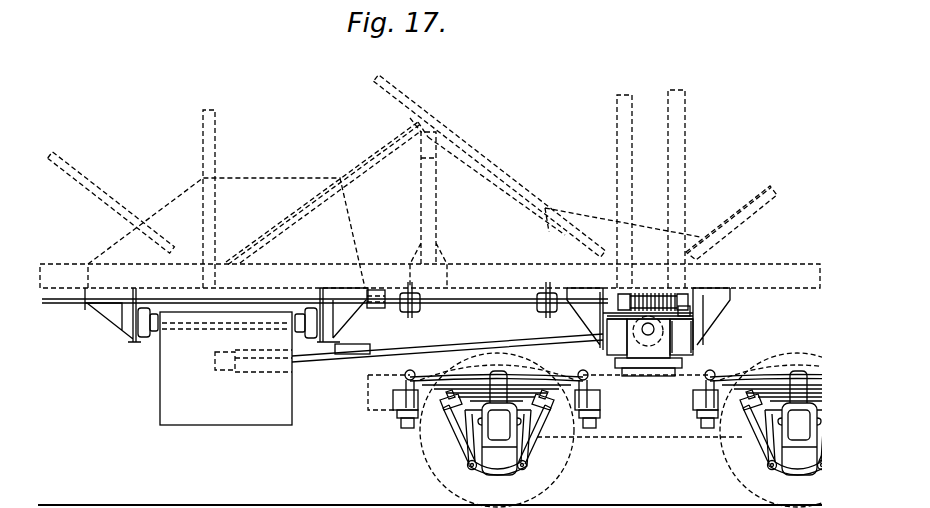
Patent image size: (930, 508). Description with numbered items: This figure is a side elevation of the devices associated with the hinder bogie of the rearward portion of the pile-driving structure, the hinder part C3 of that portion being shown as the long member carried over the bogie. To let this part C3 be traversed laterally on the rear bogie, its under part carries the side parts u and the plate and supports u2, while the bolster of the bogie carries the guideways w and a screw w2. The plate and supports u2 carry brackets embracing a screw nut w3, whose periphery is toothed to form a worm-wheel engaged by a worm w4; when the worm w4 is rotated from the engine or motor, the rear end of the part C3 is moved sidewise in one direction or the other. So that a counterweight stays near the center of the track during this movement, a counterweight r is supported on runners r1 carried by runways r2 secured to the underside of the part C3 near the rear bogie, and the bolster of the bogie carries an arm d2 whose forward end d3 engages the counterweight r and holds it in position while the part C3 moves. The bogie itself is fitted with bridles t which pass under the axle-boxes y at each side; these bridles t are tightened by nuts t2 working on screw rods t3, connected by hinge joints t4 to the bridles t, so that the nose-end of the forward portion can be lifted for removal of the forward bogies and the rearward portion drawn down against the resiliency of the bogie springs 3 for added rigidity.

The hinder part of the rearward portion C3 is at (430, 268).
The counterweight r is at (226, 368).
The runners r1 is at (140, 321).
The runways r2 is at (142, 340).
The arm d2 is at (472, 341).
The forward end of the arm d3 is at (218, 358).
The side parts u is at (580, 305).
The plate and supports u2 is at (683, 312).
The guideways w is at (622, 343).
The screw w2 is at (648, 336).
The screw nut w3 is at (663, 340).
The worm w4 is at (648, 297).
The leaf spring 3 is at (646, 382).
The bridles t is at (489, 470).
The nuts t2 is at (445, 412).
The screw rods t3 is at (452, 437).
The hinge joints t4 is at (468, 466).
The axle-boxes y is at (503, 452).